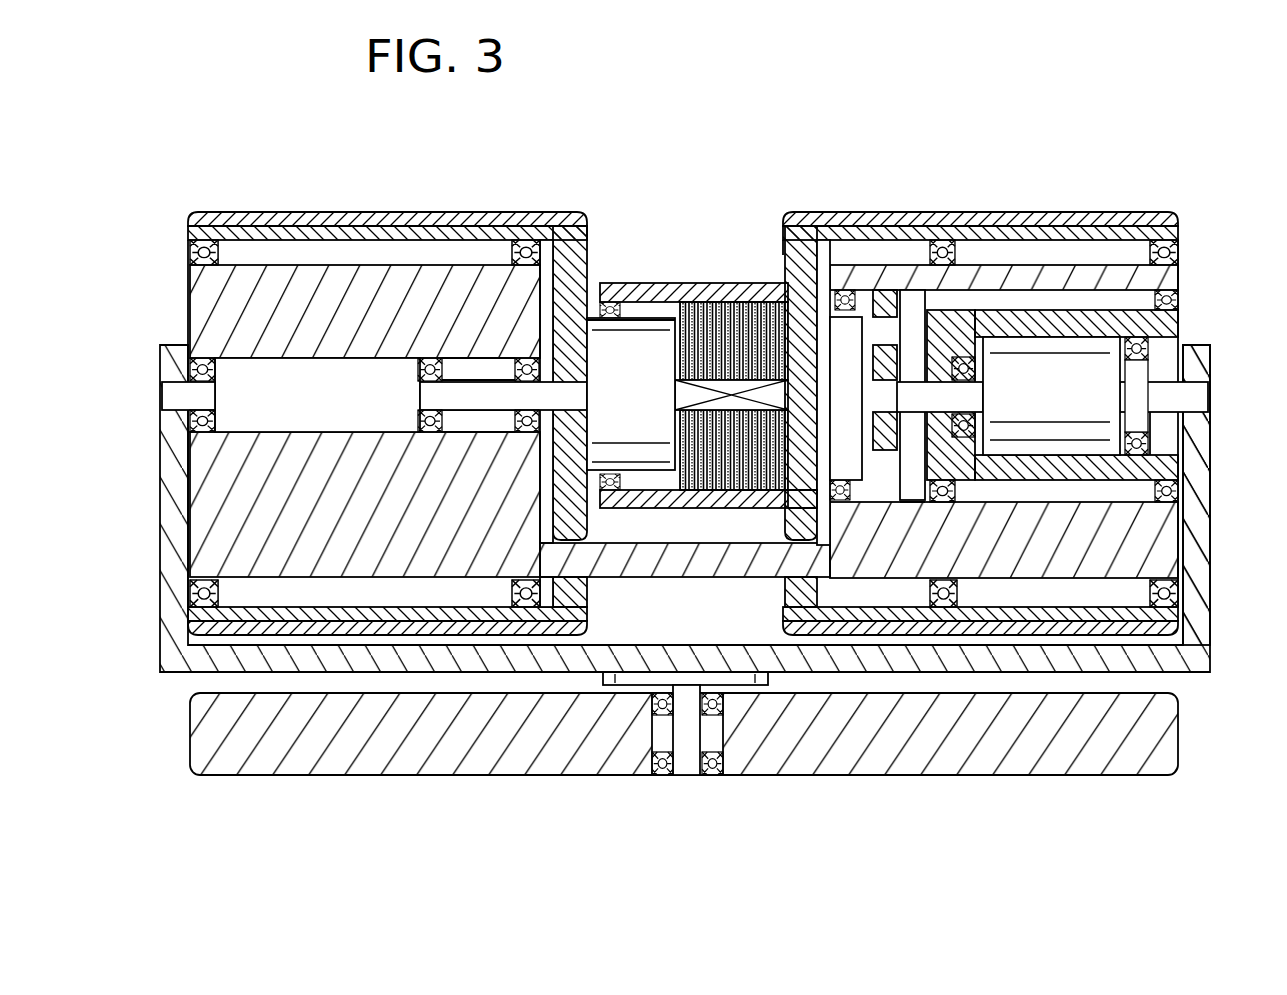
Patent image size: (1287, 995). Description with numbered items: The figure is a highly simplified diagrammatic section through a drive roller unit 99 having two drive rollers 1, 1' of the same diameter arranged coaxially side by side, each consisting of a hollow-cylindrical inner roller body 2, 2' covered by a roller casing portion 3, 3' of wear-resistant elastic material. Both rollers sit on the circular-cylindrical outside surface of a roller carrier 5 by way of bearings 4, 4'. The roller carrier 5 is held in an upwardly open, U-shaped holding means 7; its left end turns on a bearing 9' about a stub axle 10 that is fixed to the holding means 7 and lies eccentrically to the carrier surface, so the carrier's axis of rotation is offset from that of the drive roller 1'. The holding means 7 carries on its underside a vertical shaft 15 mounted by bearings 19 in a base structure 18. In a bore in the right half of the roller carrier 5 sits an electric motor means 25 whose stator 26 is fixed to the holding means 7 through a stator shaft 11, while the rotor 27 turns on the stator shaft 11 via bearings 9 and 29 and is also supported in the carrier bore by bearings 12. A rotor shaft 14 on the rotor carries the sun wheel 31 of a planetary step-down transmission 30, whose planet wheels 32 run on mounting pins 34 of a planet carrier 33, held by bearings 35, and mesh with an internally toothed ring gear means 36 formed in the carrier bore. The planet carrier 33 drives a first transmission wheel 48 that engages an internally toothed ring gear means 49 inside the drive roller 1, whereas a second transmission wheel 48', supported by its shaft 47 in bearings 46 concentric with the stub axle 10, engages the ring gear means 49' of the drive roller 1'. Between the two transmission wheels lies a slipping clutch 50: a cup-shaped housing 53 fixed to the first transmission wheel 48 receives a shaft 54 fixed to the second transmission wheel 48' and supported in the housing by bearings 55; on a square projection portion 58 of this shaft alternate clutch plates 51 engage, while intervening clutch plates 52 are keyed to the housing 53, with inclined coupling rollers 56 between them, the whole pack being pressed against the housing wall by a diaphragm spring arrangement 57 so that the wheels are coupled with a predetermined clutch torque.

The drive roller unit 99 is at (1015, 375).
The drive roller 1 is at (1007, 384).
The drive roller 1' is at (382, 375).
The roller body 2 is at (1007, 413).
The roller body 2' is at (382, 384).
The roller casing portion 3 is at (980, 381).
The roller casing portion 3' is at (387, 377).
The bearing 4 is at (1198, 421).
The bearing 4' is at (361, 388).
The roller carrier 5 is at (200, 312).
The holding means 7 is at (165, 462).
The bearing 9 is at (1051, 396).
The bearing 9' is at (162, 385).
The stub axle 10 is at (175, 397).
The stator shaft 11 is at (1180, 400).
The bearing 12 is at (942, 240).
The rotor shaft 14 is at (910, 502).
The shaft 15 is at (683, 760).
The base structure 18 is at (520, 760).
The bearing 19 is at (660, 715).
The electric motor means 25 is at (1160, 420).
The stator 26 is at (1105, 376).
The rotor 27 is at (1185, 312).
The bearing 29 is at (1150, 348).
The step-down transmission 30 is at (912, 290).
The sun wheel 31 is at (862, 395).
The planet wheels 32 is at (886, 345).
The planet carrier 33 is at (878, 290).
The mounting pins 34 is at (873, 436).
The bearing 35 is at (790, 500).
The ring gear means 36 is at (850, 300).
The bearing 46 is at (420, 375).
The shaft 47 is at (430, 393).
The first transmission wheel 48 is at (773, 401).
The second transmission wheel 48' is at (587, 400).
The ring gear means 49 is at (788, 388).
The ring gear means 49' is at (594, 376).
The slipping clutch 50 is at (694, 400).
The clutch plates 51 is at (727, 492).
The clutch plates 52 is at (702, 492).
The housing 53 is at (655, 283).
The shaft 54 is at (633, 445).
The bearing 55 is at (610, 305).
The coupling rollers 56 is at (740, 302).
The spring arrangement 57 is at (672, 322).
The projection portion 58 is at (675, 398).